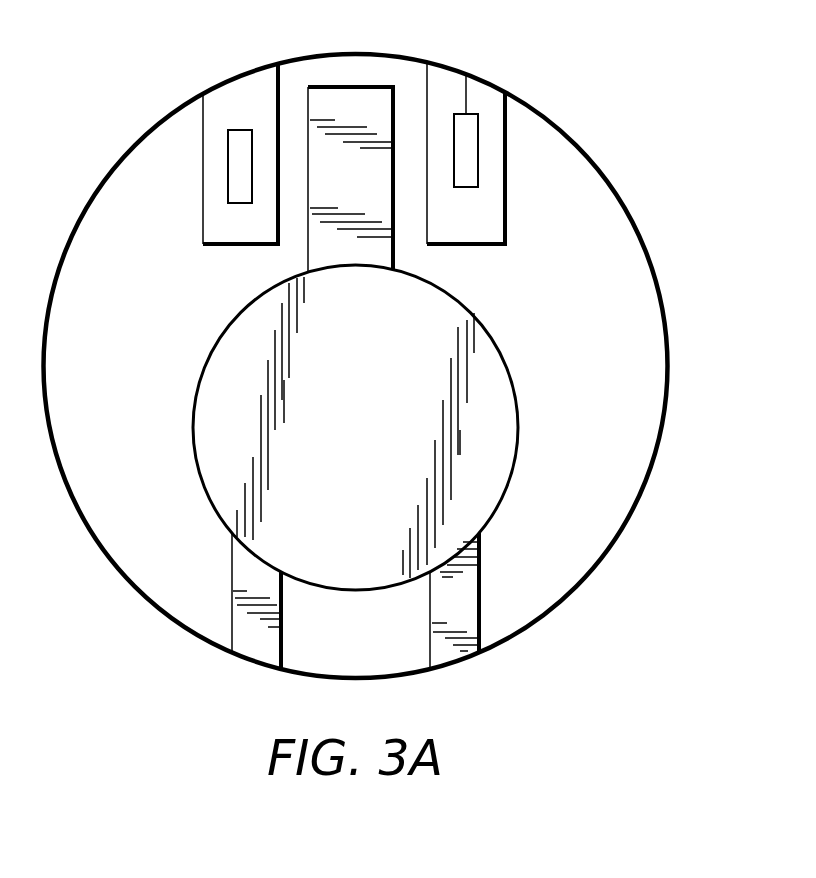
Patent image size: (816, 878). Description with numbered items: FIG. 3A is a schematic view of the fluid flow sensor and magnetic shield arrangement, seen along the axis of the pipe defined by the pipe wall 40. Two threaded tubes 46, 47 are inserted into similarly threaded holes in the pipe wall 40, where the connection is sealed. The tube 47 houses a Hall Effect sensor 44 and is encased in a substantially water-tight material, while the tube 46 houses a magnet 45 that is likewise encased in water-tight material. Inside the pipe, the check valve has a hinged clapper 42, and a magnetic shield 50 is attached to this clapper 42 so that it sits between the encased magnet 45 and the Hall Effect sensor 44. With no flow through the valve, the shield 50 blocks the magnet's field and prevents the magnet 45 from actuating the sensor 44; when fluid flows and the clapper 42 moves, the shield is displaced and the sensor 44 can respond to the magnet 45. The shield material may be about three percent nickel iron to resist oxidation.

The pipe wall 40 is at (44, 360).
The hinged clapper 42 is at (369, 443).
The Hall Effect sensor 44 is at (478, 160).
The magnet 45 is at (230, 163).
The tube 46 is at (203, 218).
The tube 47 is at (507, 218).
The magnetic shield 50 is at (357, 105).